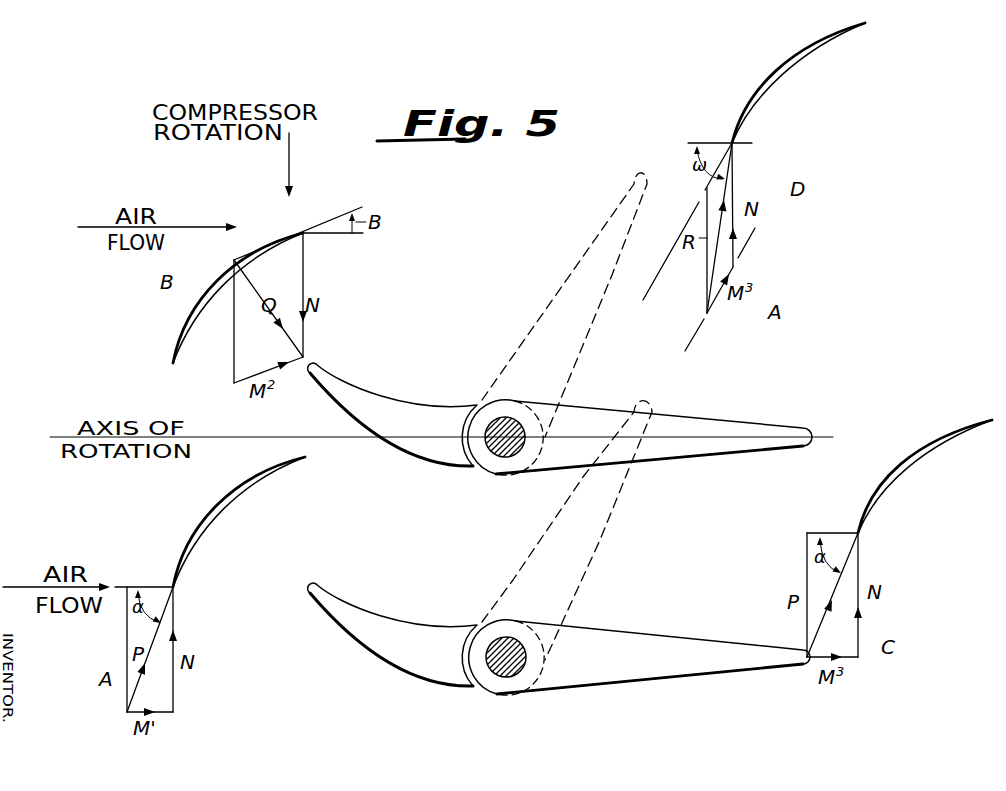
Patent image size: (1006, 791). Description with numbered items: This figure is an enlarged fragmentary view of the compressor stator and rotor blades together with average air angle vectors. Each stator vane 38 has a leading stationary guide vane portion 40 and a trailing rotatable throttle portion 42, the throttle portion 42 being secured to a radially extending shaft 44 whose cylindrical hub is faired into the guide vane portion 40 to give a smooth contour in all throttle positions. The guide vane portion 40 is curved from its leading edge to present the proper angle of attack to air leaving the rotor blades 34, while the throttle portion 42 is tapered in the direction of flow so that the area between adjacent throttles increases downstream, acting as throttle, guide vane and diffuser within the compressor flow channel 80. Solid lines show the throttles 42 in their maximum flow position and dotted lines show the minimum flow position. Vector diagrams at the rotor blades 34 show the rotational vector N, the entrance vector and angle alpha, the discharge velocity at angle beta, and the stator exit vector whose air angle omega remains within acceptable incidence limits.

The rotor blades 34 is at (193, 316).
The stator vane 38 is at (550, 704).
The stationary guide vane portion 40 is at (368, 405).
The throttle portion 42 is at (587, 248).
The shaft 44 is at (503, 444).
The compressor flow channel 80 is at (412, 536).